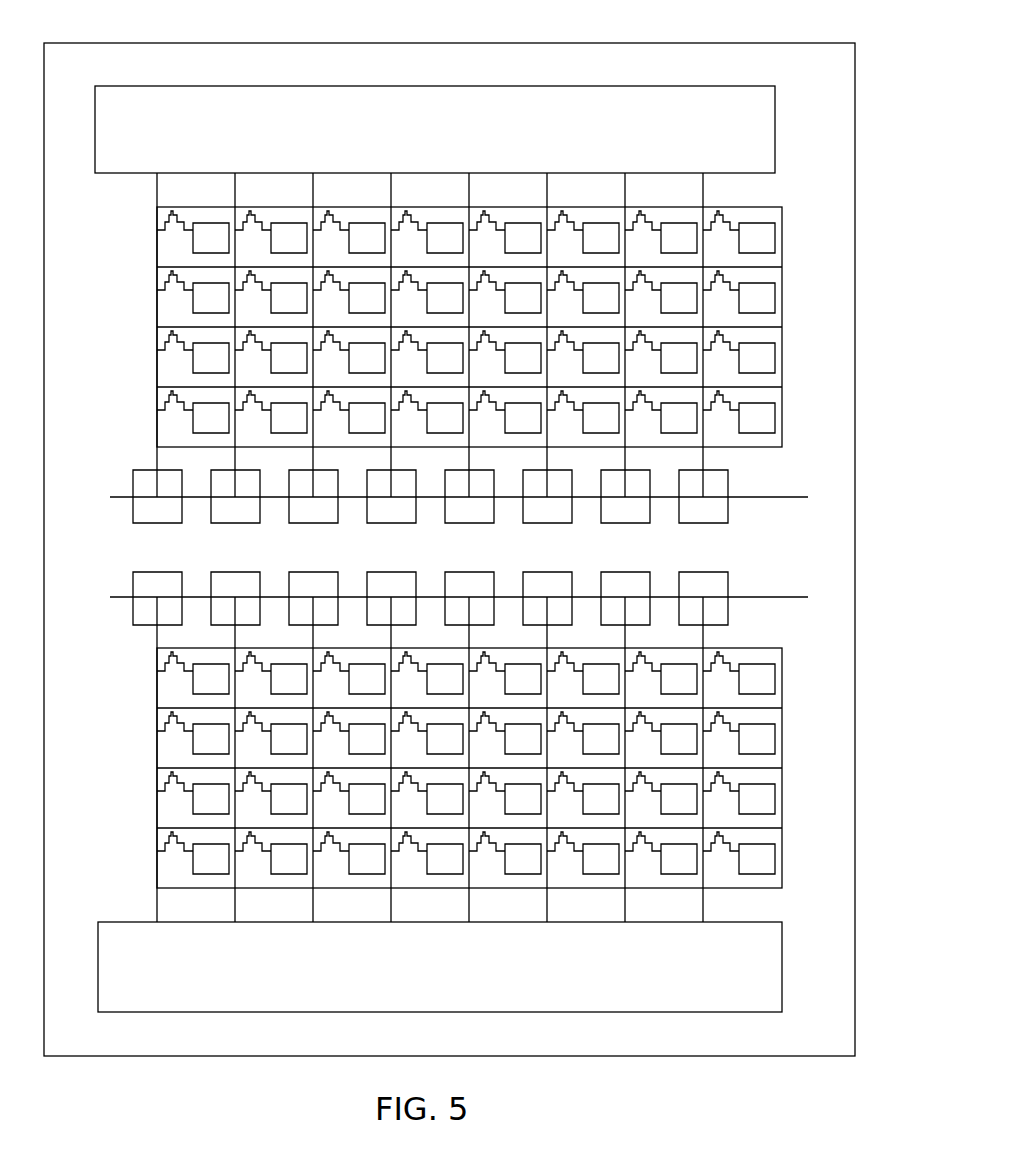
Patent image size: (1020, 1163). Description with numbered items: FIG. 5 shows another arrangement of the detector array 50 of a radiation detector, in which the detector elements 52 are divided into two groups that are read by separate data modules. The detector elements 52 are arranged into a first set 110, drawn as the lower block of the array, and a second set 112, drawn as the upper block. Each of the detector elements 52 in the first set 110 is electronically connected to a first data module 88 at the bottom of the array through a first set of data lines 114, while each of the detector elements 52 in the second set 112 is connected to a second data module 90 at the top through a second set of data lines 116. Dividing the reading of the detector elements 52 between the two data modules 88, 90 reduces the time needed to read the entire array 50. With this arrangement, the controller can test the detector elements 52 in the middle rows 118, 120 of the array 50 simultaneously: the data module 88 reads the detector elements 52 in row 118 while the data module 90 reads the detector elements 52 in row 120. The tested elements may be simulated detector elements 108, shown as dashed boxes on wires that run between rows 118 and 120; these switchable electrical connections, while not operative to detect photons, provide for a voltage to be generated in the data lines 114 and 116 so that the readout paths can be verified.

The detector array 50 is at (805, 98).
The detector elements 52 is at (420, 542).
The first data module 88 is at (782, 966).
The second data module 90 is at (775, 127).
The simulated detector elements 108 is at (124, 496).
The first set of detector elements 110 is at (150, 762).
The second set of detector elements 112 is at (150, 297).
The first set of data lines 114 is at (157, 906).
The second set of data lines 116 is at (157, 196).
The middle row 118 is at (800, 673).
The middle row 120 is at (800, 422).